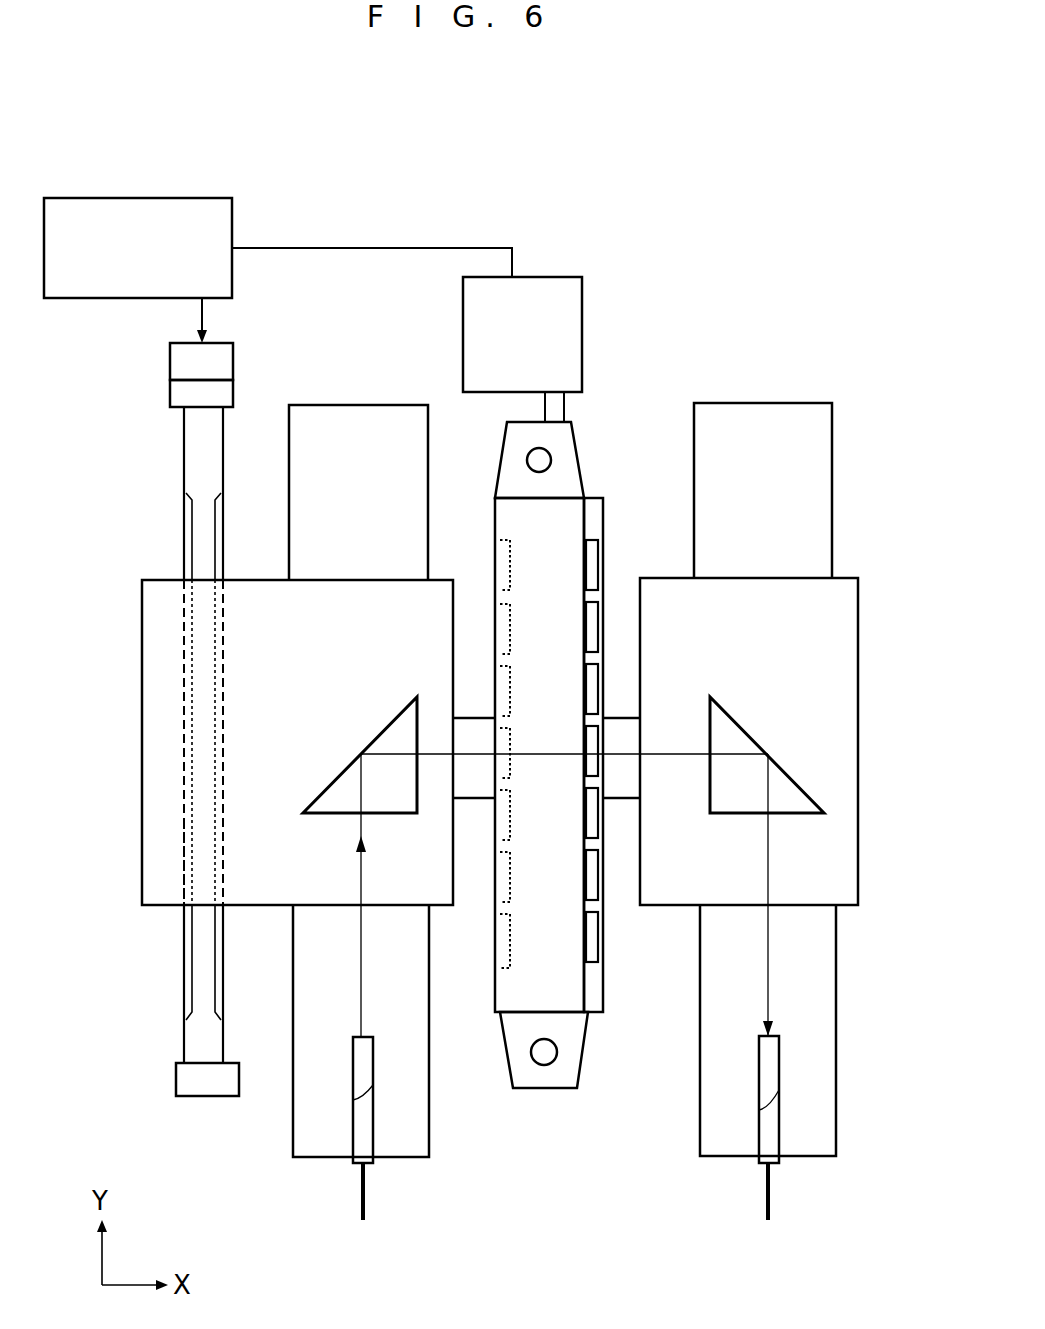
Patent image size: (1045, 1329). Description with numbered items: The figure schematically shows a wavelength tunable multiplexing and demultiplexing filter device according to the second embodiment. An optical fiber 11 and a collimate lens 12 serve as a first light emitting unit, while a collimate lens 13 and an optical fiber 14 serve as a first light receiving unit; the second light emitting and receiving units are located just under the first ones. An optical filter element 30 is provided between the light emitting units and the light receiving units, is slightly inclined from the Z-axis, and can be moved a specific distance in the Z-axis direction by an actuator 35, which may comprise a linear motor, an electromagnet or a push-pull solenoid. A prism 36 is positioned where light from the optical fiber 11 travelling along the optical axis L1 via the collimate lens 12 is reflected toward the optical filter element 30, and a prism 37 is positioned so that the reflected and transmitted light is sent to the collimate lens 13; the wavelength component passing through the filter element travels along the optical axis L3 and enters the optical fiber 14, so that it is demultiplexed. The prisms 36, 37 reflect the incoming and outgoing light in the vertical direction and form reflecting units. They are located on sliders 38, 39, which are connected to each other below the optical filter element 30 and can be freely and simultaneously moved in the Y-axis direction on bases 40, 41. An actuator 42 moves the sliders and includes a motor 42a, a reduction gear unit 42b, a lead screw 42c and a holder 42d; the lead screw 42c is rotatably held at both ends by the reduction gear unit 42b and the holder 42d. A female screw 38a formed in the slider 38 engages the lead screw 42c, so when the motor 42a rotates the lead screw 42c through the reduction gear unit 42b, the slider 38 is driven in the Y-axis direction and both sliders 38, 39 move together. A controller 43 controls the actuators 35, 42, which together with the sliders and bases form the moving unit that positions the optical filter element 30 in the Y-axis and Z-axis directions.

The controller 43 is at (147, 197).
The motor 42a is at (170, 356).
The reduction gear unit 42b is at (170, 402).
The actuator 42 is at (141, 533).
The lead screw 42c is at (190, 688).
The holder 42d is at (176, 1078).
The base 40 is at (358, 400).
The base 41 is at (761, 402).
The slider 38 is at (263, 578).
The female screw 38a is at (187, 858).
The slider 39 is at (850, 577).
The actuator 35 is at (560, 273).
The optical filter element 30 is at (572, 507).
The prism 36 is at (320, 815).
The prism 37 is at (805, 790).
The optical axis L1 is at (357, 997).
The optical axis L3 is at (768, 985).
The collimate lens 12 is at (353, 1092).
The optical fiber 11 is at (367, 1198).
The collimate lens 13 is at (779, 1070).
The optical fiber 14 is at (772, 1195).